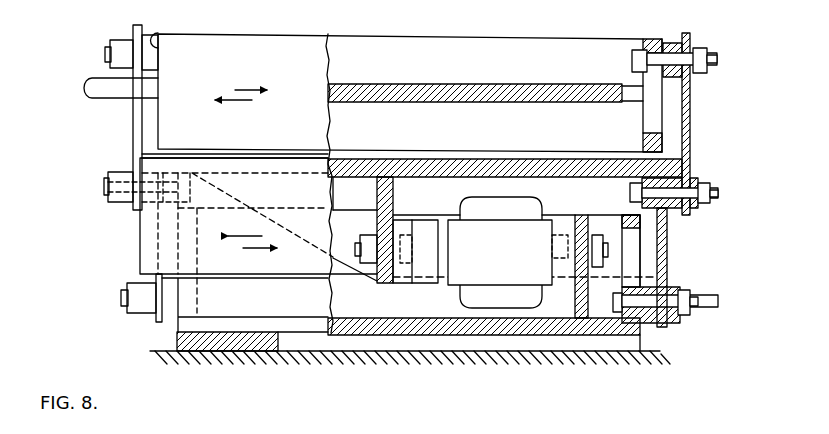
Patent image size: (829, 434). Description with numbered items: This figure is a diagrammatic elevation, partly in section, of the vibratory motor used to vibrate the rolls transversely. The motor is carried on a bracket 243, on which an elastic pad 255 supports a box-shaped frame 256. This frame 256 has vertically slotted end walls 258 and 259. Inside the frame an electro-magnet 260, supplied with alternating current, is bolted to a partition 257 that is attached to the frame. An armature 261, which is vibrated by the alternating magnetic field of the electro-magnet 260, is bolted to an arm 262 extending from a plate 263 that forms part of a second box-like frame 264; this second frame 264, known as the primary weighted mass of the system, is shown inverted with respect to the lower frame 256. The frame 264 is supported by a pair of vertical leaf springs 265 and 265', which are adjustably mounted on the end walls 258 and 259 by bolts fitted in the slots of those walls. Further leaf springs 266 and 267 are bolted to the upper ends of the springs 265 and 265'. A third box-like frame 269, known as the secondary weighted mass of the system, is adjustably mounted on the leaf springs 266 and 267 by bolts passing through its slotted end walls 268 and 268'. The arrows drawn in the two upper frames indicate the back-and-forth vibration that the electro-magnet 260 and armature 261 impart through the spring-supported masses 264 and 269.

The bracket 243 is at (452, 358).
The elastic pad 255 is at (240, 352).
The box-shaped frame 256 is at (370, 335).
The partition 257 is at (593, 197).
The end wall 258 is at (636, 258).
The end wall 259 is at (175, 318).
The electro-magnet 260 is at (475, 207).
The armature 261 is at (427, 277).
The arm 262 is at (353, 258).
The plate 263 is at (372, 178).
The second box-like frame 264 is at (723, 154).
The vertical leaf spring 265 is at (708, 267).
The vertical leaf spring 265' is at (127, 213).
The leaf spring 266 is at (690, 101).
The leaf spring 267 is at (133, 125).
The slotted end wall 268 is at (673, 110).
The slotted end wall 268' is at (154, 40).
The third box-like frame 269 is at (270, 57).